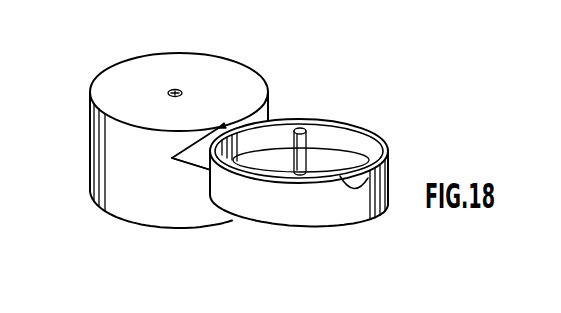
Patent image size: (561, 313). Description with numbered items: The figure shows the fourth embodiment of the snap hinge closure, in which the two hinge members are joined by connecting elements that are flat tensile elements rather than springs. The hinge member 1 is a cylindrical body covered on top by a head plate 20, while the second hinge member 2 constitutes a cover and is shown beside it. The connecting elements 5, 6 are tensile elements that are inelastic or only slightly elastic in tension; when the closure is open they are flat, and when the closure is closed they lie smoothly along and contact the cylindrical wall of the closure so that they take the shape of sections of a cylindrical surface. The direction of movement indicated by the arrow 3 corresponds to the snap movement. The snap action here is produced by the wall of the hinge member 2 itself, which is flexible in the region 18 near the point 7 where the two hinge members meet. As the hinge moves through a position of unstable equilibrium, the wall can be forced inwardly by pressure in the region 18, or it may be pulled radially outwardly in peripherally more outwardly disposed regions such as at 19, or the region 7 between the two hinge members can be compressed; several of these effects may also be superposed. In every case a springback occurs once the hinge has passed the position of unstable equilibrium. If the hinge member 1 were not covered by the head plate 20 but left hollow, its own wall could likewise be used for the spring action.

The hinge member 1 is at (160, 127).
The hinge member 2 is at (299, 145).
The notch direction 3 is at (158, 165).
The connecting element 5 is at (203, 160).
The connecting element 6 is at (193, 164).
The point 7 is at (233, 118).
The region 18 is at (252, 138).
The peripherally outwardly disposed region 19 is at (287, 132).
The head plate 20 is at (117, 85).